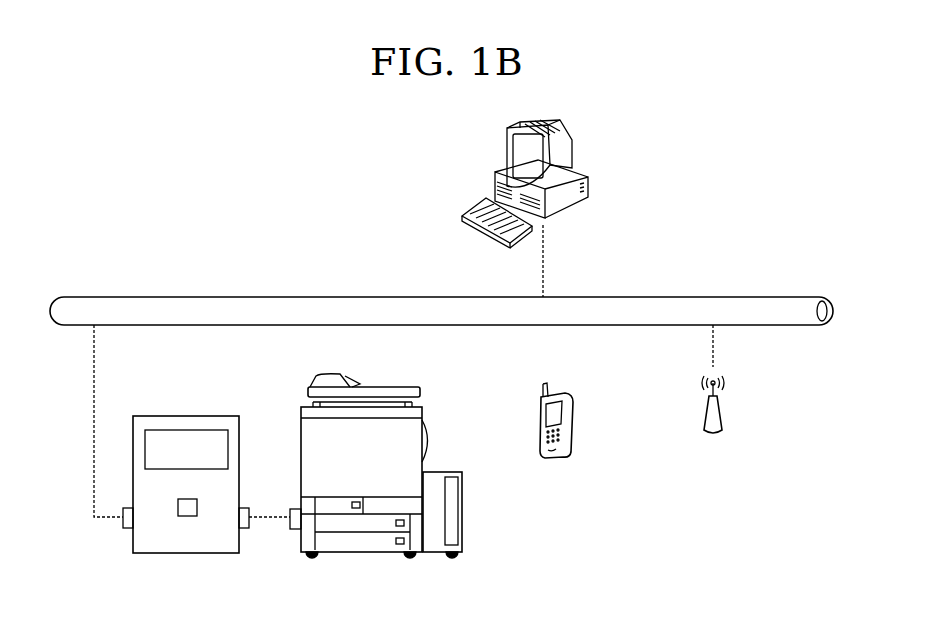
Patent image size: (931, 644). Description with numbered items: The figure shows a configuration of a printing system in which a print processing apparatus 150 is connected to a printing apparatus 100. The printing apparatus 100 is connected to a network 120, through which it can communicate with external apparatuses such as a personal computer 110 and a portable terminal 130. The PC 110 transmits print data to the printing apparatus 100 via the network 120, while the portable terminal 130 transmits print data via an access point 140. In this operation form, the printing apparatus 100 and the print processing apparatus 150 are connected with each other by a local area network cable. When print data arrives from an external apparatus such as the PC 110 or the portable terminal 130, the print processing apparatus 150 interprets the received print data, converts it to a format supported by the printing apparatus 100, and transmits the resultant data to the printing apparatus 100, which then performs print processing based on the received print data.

The printing apparatus 100 is at (456, 507).
The personal computer 110 is at (560, 203).
The network 120 is at (95, 297).
The portable terminal 130 is at (565, 436).
The access point 140 is at (713, 434).
The print processing apparatus 150 is at (150, 553).